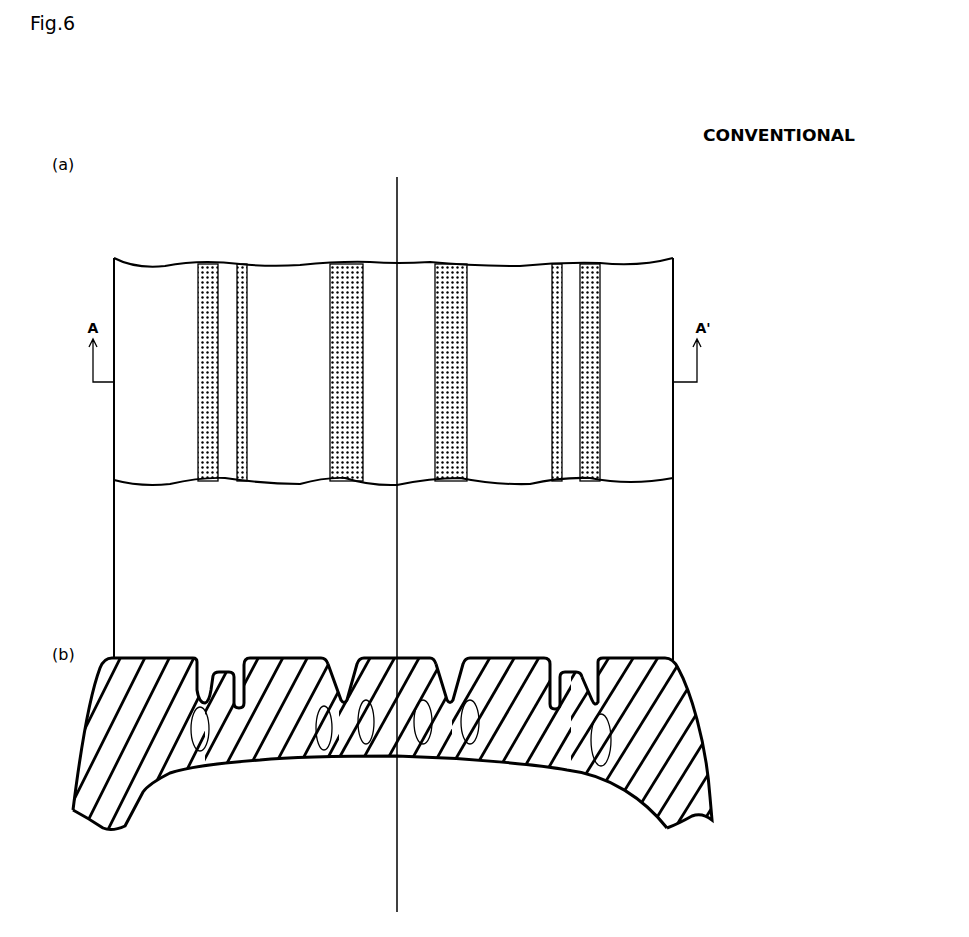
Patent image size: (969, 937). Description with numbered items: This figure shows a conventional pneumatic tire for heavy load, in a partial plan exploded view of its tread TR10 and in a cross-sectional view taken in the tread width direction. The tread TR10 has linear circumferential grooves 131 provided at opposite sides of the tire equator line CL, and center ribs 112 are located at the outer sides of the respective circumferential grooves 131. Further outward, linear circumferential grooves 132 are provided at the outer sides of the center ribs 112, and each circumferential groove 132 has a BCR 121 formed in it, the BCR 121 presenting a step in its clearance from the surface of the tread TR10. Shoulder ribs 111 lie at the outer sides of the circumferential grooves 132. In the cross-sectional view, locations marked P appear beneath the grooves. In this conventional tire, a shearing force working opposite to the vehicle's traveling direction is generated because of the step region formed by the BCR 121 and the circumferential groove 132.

The shoulder rib 111 is at (162, 276).
The center rib 112 is at (292, 278).
The BCR 121 is at (229, 270).
The circumferential groove 131 is at (349, 268).
The circumferential groove 132 is at (205, 270).
The tread TR10 is at (627, 150).
The tire equator line CL is at (400, 213).
The point of stress concentration P is at (200, 752).